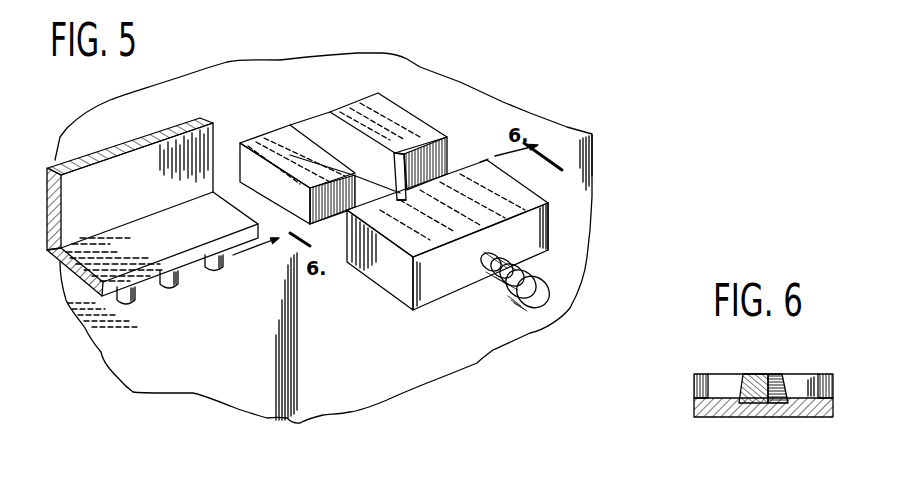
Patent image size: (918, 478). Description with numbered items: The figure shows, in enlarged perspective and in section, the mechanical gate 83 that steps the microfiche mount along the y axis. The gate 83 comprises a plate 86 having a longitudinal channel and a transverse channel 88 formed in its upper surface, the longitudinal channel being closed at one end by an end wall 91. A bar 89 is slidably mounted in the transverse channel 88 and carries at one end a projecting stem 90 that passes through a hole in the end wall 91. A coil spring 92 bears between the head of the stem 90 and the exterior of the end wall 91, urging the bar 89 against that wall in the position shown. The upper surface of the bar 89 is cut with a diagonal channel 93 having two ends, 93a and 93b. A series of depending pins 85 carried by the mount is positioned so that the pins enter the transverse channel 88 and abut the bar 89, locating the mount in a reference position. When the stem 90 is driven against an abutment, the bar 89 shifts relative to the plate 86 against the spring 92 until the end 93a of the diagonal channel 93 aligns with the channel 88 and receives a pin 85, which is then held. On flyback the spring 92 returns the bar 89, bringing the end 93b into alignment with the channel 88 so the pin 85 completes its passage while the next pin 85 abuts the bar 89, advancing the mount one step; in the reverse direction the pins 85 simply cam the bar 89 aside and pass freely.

In FIG. 5, the mechanical gate 83 is at (573, 228).
In FIG. 5, the depending pins 85 is at (176, 286).
In FIG. 5, the plate 86 is at (385, 125).
In FIG. 6, the plate 86 is at (806, 413).
In FIG. 5, the transverse channel 88 is at (331, 212).
In FIG. 6, the transverse channel 88 is at (820, 384).
In FIG. 5, the bar 89 is at (307, 128).
In FIG. 6, the bar 89 is at (752, 384).
In FIG. 5, the projecting stem 90 is at (532, 298).
In FIG. 5, the end wall 91 is at (462, 250).
In FIG. 5, the coil spring 92 is at (522, 268).
In FIG. 5, the diagonal channel 93 is at (449, 144).
In FIG. 6, the diagonal channel 93 is at (772, 392).
In FIG. 5, the end of diagonal channel 93a is at (447, 170).
In FIG. 5, the end of diagonal channel 93b is at (394, 157).